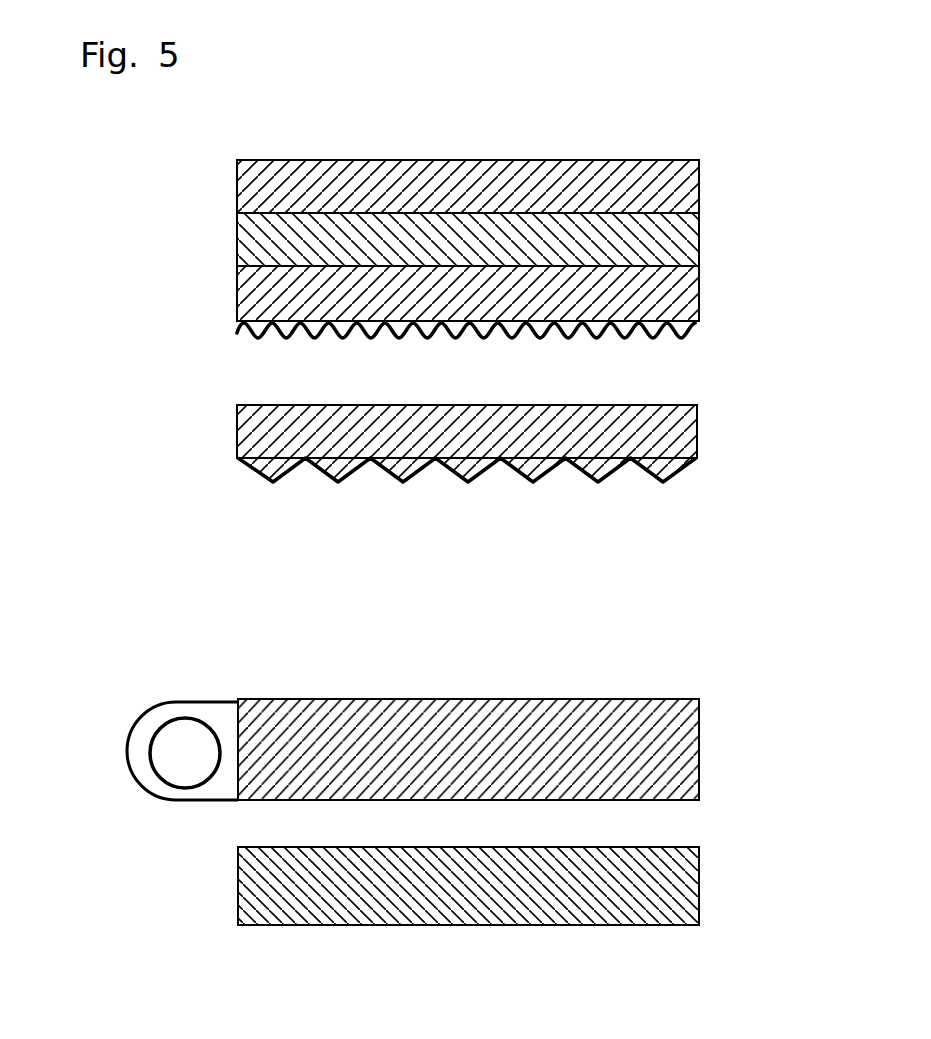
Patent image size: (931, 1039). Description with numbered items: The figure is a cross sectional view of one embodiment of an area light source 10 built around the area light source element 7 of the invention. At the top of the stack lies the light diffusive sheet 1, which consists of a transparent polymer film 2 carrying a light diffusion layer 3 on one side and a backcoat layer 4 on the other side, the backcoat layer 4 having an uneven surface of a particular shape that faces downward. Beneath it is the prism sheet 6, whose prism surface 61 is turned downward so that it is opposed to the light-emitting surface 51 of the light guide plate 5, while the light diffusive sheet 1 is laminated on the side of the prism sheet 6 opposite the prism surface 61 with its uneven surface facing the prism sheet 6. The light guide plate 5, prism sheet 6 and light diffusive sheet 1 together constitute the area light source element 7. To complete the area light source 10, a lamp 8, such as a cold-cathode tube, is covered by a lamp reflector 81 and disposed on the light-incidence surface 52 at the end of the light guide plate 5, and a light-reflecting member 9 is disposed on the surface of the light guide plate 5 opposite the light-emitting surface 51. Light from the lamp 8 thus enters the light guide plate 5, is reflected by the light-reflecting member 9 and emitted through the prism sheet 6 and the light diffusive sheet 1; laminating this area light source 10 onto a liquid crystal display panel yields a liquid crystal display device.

The light diffusive sheet 1 is at (223, 158).
The transparent polymer film 2 is at (700, 240).
The light diffusion layer 3 is at (700, 178).
The backcoat layer 4 is at (700, 295).
The light guide plate 5 is at (703, 752).
The prism sheet 6 is at (503, 505).
The area light source element 7 is at (808, 142).
The lamp 8 is at (172, 724).
The light-reflecting member 9 is at (703, 883).
The area light source 10 is at (100, 170).
The light-emitting surface 51 is at (693, 685).
The light-incidence surface 52 is at (238, 718).
The prism surface 61 is at (467, 532).
The lamp reflector 81 is at (170, 803).